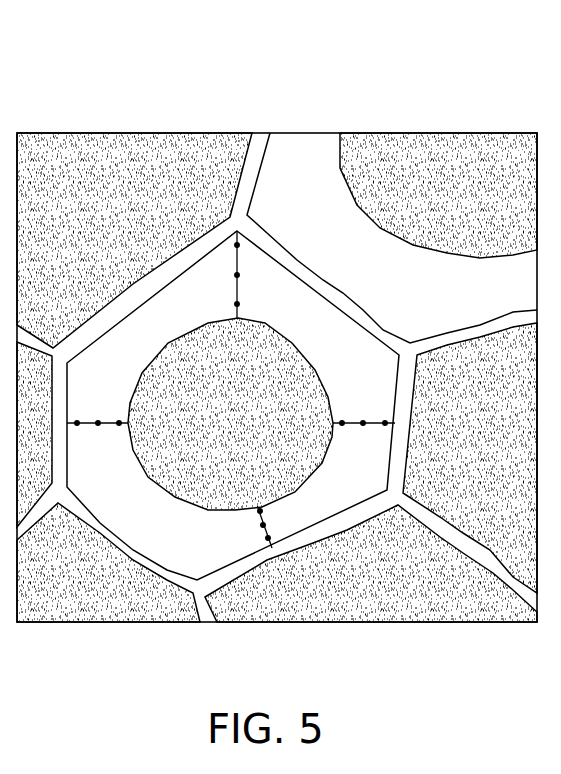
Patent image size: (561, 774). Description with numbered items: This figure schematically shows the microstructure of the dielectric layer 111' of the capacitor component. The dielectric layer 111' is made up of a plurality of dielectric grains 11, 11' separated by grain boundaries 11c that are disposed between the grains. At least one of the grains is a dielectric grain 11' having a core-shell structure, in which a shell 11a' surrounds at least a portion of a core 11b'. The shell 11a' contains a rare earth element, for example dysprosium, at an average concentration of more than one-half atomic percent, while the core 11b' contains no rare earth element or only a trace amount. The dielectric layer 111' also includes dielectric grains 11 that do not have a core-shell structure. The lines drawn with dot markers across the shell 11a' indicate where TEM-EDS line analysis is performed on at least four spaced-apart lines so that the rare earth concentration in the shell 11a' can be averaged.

The polycrystalline semiconductor layer 111' is at (277, 316).
The dielectric grain 11 is at (134, 197).
The grain boundary 11c is at (387, 194).
The dielectric grain having a core-shell structure 11' is at (240, 311).
The shell 11a' is at (233, 330).
The core 11b' is at (271, 295).